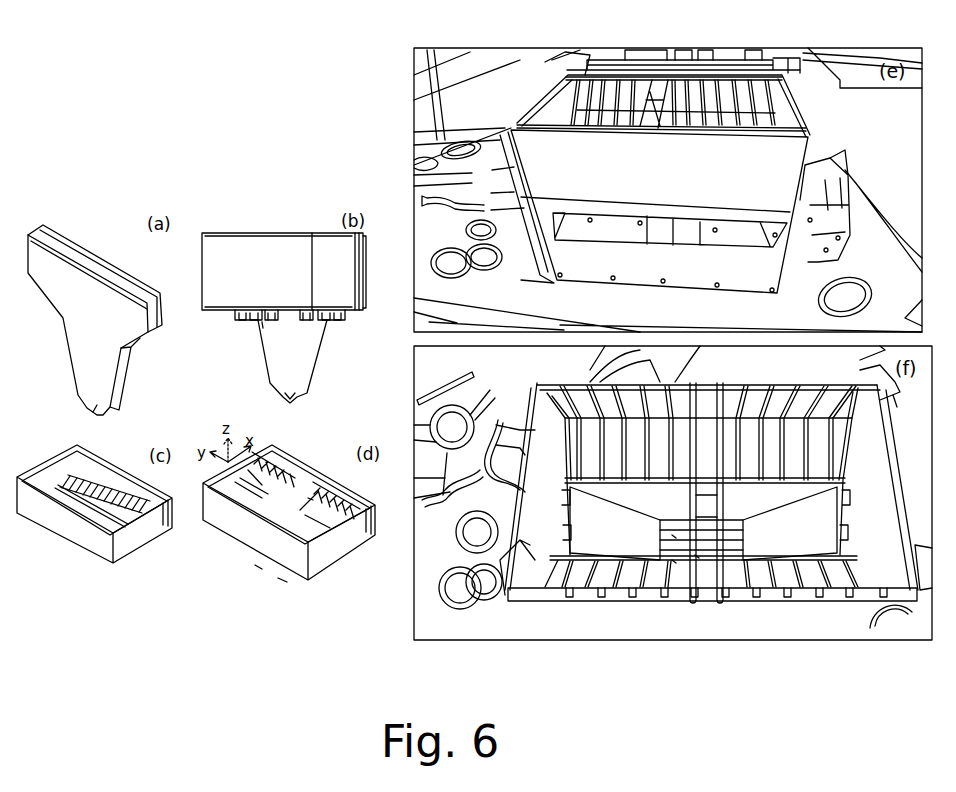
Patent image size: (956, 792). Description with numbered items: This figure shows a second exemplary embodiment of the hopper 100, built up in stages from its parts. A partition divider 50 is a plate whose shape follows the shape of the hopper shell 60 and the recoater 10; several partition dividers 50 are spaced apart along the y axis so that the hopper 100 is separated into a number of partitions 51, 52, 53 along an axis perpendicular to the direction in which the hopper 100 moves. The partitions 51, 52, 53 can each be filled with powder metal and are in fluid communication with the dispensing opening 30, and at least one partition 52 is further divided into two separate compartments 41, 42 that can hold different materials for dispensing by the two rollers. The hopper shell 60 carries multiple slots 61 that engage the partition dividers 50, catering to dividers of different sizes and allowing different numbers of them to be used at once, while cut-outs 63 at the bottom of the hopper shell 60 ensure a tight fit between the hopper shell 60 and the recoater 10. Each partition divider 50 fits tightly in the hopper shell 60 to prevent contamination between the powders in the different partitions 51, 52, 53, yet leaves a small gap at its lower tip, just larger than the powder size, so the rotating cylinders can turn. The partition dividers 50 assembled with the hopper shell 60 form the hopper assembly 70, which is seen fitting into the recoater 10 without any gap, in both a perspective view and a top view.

The recoater 10 is at (505, 230).
The dispensing opening 30 is at (648, 528).
The compartment 41 is at (705, 442).
The compartment 42 is at (707, 575).
The partition divider 50 is at (677, 65).
The partition 51 is at (582, 543).
The partition 52 is at (688, 568).
The partition 53 is at (817, 545).
The hopper shell 60 is at (612, 88).
The slot 61 is at (82, 497).
The cut-out 63 is at (263, 323).
The hopper assembly 70 is at (560, 62).
The hopper 100 is at (744, 22).